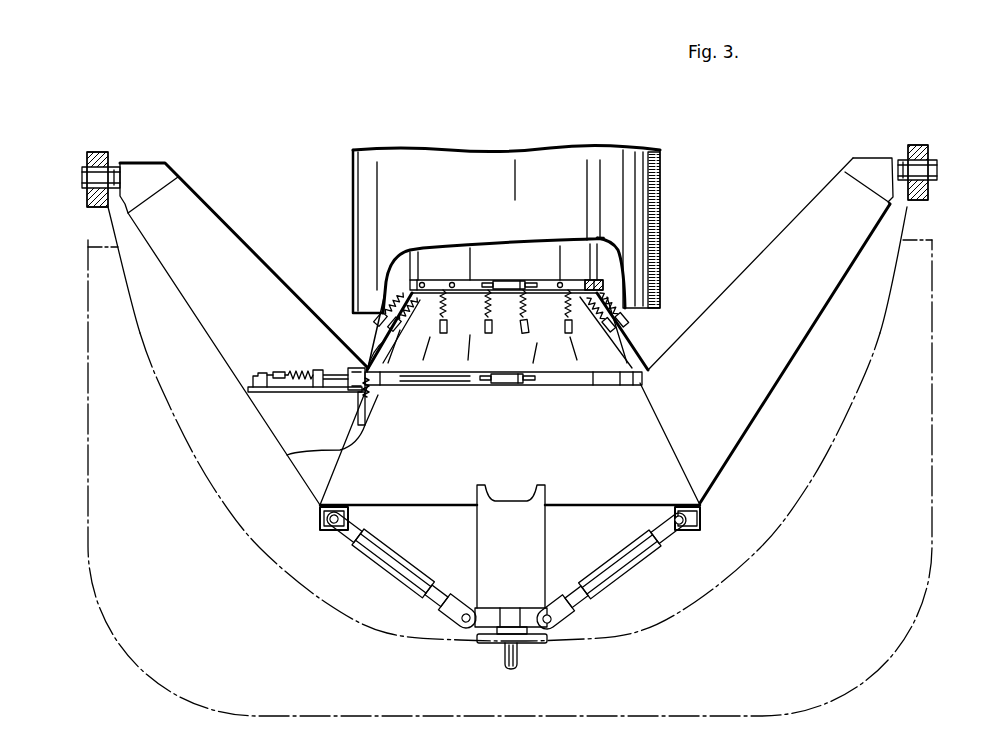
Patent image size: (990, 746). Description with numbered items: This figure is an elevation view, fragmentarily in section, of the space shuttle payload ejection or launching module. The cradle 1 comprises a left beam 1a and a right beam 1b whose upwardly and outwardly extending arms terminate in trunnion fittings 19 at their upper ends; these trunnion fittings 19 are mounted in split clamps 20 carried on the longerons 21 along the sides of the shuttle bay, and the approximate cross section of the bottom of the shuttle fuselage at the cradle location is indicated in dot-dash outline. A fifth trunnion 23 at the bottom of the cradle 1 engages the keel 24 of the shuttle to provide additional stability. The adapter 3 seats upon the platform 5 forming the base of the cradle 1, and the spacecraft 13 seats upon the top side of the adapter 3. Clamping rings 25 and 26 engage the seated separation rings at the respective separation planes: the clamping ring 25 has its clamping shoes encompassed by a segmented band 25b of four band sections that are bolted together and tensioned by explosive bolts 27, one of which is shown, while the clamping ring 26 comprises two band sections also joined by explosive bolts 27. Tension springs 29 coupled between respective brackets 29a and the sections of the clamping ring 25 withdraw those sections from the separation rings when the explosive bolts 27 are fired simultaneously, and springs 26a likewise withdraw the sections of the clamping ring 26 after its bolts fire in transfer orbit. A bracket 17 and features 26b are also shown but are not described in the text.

The cradle 1 is at (315, 483).
The left beam 1a is at (750, 275).
The right beam 1b is at (254, 262).
The adapter 3 is at (615, 357).
The platform 5 is at (293, 392).
The spacecraft 13 is at (665, 205).
The bracket 17 is at (378, 390).
The trunnion fittings 19 is at (82, 174).
The split clamps 20 is at (96, 152).
The longerons 21 is at (88, 268).
The fifth trunnion 23 is at (518, 668).
The keel 24 is at (533, 644).
The clamping ring 25 is at (589, 388).
The segmented band 25b is at (447, 386).
The clamping ring 26 is at (506, 314).
The springs 26a is at (568, 312).
The holes 26b is at (454, 287).
The explosive bolts 27 is at (505, 372).
The tension springs 29 is at (310, 375).
The brackets 29a is at (263, 373).